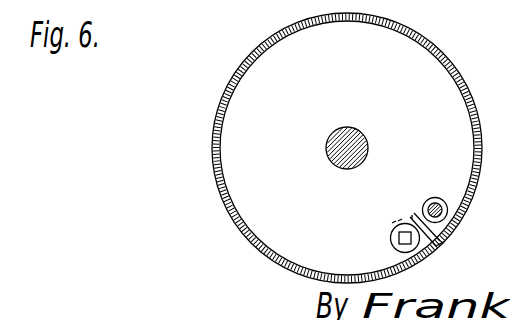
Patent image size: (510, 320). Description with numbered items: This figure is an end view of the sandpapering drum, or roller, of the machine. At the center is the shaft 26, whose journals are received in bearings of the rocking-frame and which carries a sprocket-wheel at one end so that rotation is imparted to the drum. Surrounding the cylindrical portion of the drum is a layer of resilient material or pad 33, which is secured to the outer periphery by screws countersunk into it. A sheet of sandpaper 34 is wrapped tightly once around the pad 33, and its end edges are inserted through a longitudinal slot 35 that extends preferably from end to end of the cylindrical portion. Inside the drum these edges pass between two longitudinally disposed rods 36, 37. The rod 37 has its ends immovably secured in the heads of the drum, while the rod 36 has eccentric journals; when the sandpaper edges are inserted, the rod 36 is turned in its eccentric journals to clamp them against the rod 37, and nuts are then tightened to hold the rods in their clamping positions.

The shaft 26 is at (345, 128).
The pad 33 is at (222, 160).
The sandpaper 34 is at (213, 143).
The longitudinal slot 35 is at (445, 241).
The rod 36 is at (390, 236).
The rod 37 is at (431, 197).